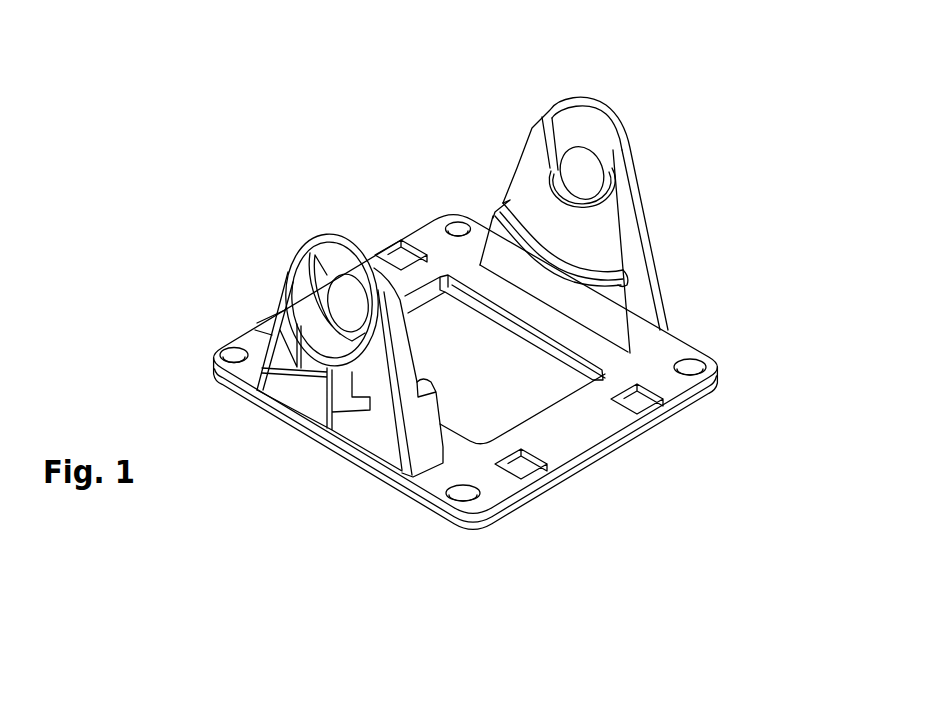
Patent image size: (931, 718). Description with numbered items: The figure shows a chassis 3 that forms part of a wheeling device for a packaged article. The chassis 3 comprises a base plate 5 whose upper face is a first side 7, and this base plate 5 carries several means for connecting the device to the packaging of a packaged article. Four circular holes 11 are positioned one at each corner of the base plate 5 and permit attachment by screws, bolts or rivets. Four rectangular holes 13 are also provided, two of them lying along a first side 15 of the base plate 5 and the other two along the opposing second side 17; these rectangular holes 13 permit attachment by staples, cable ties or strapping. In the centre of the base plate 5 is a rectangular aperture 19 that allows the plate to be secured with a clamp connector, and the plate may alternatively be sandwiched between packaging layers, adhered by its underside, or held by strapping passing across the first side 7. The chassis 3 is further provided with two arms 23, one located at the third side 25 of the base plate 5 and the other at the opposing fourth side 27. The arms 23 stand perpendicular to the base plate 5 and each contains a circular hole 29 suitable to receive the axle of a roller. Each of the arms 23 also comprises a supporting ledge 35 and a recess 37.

The chassis 3 is at (336, 210).
The base plate 5 is at (573, 433).
The first side 7 is at (563, 447).
The circular holes 11 is at (458, 228).
The rectangular holes 13 is at (401, 268).
The first side 15 is at (668, 413).
The second side 17 is at (240, 325).
The rectangular aperture 19 is at (680, 352).
The arms 23 is at (305, 267).
The third side 25 is at (322, 447).
The fourth side 27 is at (513, 390).
The circular hole 29 is at (574, 158).
The supporting ledge 35 is at (553, 262).
The recess 37 is at (548, 120).